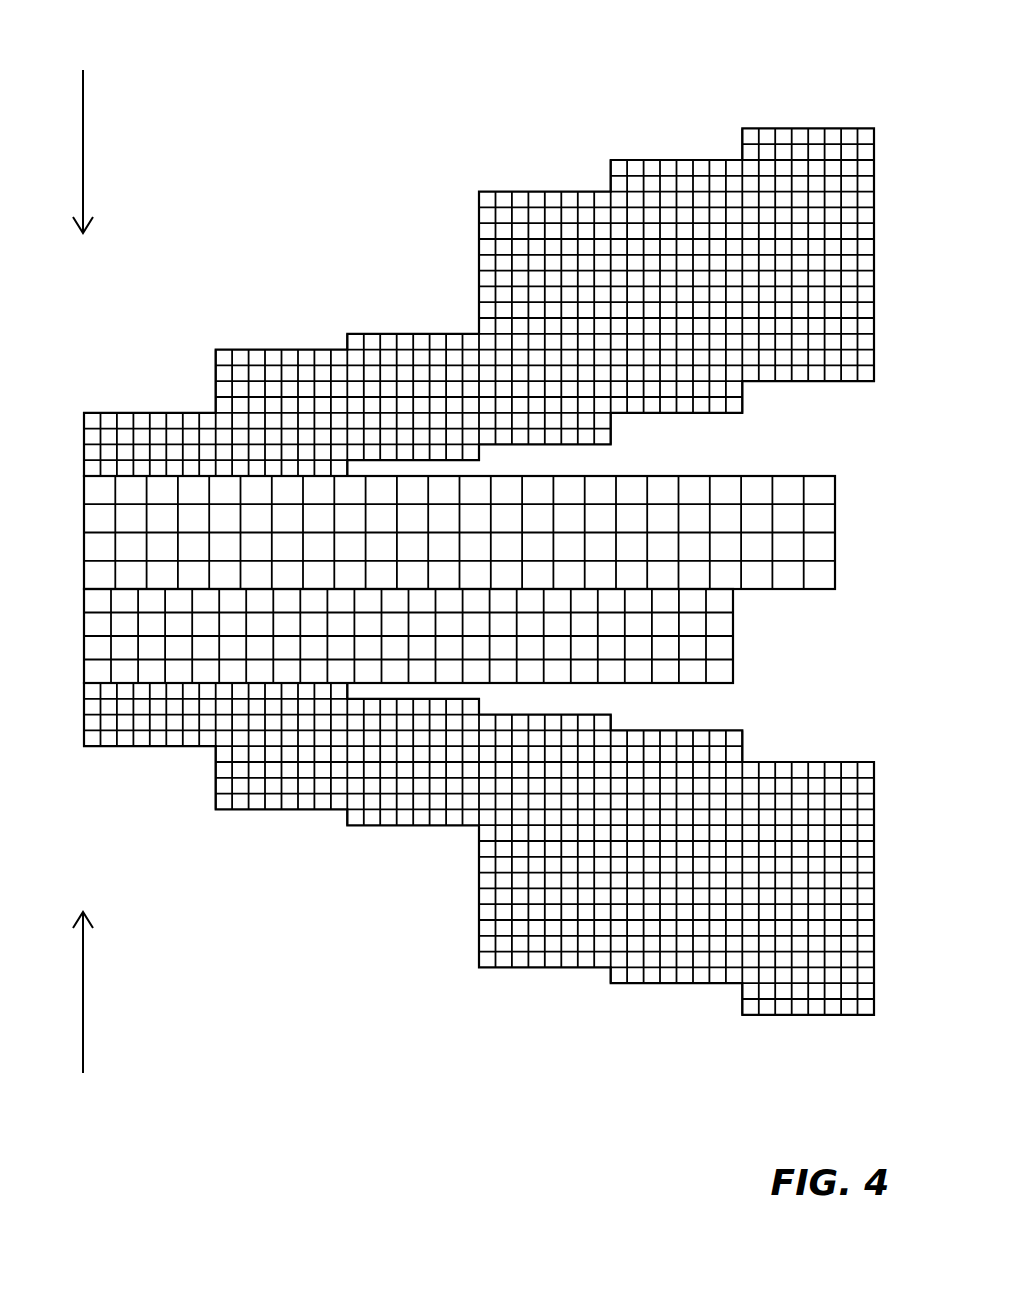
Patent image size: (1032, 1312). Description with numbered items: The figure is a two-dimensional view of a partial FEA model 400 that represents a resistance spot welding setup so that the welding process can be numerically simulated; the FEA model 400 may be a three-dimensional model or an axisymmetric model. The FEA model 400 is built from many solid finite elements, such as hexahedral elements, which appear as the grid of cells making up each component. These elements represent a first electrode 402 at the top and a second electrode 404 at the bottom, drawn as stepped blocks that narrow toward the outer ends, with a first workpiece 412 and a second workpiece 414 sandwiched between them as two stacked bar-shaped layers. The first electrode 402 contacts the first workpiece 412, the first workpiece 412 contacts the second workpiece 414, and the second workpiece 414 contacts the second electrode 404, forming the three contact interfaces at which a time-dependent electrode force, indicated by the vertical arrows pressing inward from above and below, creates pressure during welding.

The FEA model 400 is at (879, 49).
The first electrode 402 is at (147, 398).
The second electrode 404 is at (173, 753).
The first workpiece 412 is at (785, 476).
The second workpiece 414 is at (738, 640).